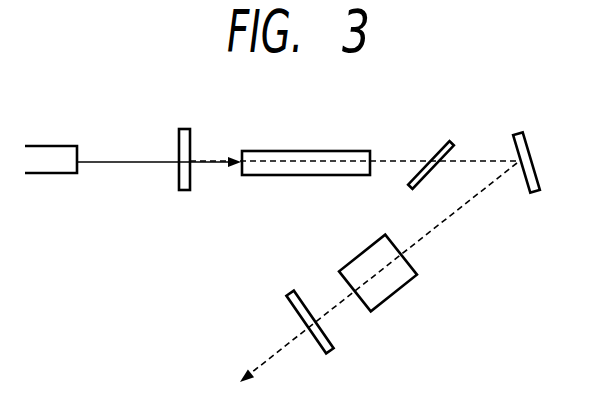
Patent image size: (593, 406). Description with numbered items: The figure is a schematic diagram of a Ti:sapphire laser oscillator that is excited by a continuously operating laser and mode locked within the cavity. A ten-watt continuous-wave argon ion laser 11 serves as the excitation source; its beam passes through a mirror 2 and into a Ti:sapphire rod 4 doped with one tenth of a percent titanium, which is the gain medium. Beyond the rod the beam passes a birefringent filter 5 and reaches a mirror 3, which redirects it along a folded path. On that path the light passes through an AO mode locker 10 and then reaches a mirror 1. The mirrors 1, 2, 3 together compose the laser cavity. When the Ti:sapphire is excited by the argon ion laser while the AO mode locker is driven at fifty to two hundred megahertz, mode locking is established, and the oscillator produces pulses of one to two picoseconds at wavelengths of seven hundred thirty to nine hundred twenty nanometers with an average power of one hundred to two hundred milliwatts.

The argon ion laser 11 is at (63, 146).
The mirror 2 is at (185, 129).
The Ti:sapphire rod 4 is at (343, 151).
The birefringent filter 5 is at (437, 143).
The mirror 3 is at (521, 134).
The AO mode locker 10 is at (348, 264).
The mirror 1 is at (297, 292).